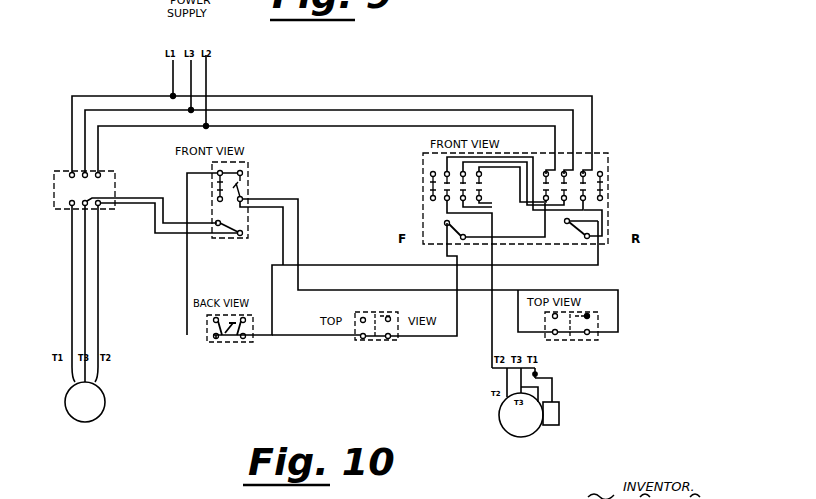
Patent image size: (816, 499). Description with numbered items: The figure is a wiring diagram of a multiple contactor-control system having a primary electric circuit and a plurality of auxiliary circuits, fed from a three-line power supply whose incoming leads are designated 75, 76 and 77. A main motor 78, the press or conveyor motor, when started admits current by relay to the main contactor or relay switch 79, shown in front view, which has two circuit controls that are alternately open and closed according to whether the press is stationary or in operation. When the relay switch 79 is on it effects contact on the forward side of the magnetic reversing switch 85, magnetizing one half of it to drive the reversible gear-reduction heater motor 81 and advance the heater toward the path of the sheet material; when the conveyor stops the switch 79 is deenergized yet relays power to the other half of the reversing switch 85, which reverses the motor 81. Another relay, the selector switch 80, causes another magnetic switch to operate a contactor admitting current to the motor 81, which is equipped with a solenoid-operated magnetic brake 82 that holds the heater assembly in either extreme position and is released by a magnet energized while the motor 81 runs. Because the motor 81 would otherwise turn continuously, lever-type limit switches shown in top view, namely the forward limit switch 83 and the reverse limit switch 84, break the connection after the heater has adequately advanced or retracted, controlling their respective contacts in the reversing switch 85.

The power supply line L1 75 is at (168, 70).
The power supply line L2 76 is at (209, 78).
The power supply line L3 77 is at (196, 61).
The main motor 78 is at (85, 422).
The relay switch 79 is at (402, 248).
The relay 80 is at (390, 298).
The heater motor 81 is at (513, 425).
The magnetic brake 82 is at (560, 404).
The forward-limit switch 83 is at (364, 306).
The reverse-limit switch 84 is at (566, 336).
The magnetic reversing switch 85 is at (559, 260).